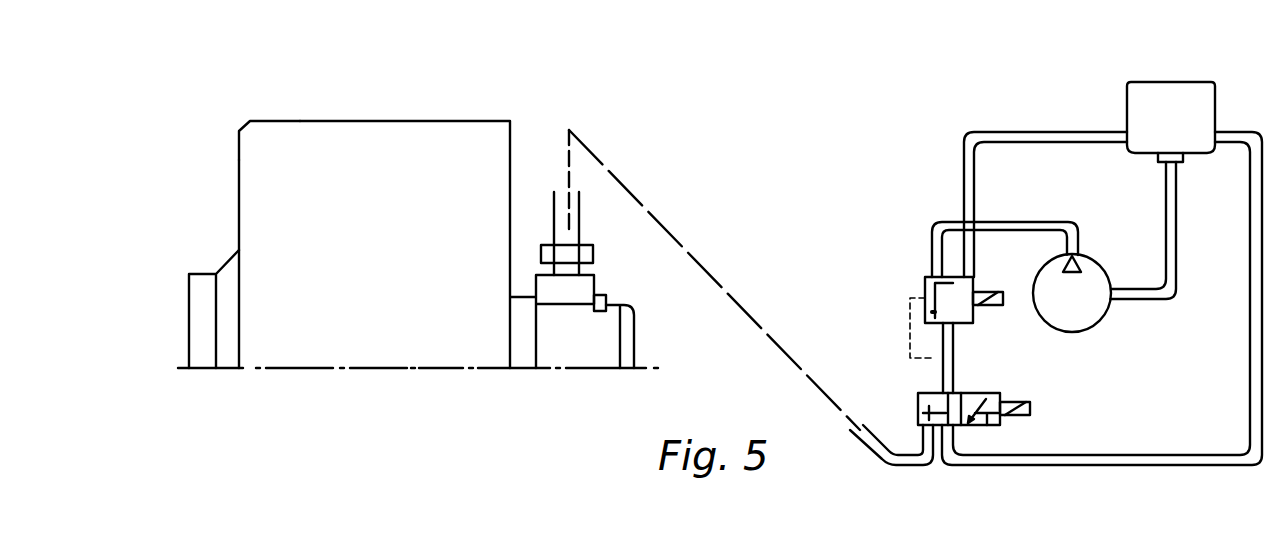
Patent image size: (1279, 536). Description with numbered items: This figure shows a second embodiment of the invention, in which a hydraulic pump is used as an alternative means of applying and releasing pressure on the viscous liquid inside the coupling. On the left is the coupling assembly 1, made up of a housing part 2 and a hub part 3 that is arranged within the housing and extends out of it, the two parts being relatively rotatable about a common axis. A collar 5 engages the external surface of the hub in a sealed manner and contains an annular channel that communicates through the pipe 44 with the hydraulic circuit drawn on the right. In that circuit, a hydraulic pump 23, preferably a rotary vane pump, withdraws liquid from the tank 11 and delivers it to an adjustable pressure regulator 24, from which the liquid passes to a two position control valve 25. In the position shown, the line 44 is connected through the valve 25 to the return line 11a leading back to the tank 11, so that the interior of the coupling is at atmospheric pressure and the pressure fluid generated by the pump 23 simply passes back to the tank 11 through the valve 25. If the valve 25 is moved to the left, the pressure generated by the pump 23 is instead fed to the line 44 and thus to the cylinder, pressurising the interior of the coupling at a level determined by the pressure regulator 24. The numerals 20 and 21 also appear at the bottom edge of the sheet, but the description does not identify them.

The coupling assembly 1 is at (349, 220).
The housing part 2 is at (275, 137).
The hub part 3 is at (600, 327).
The collar 5 is at (548, 287).
The pipe 44 is at (698, 262).
The tank 11 is at (1148, 99).
The return line 11a is at (1123, 465).
The hydraulic pump 23 is at (1088, 307).
The adjustable pressure regulator 24 is at (955, 307).
The two position control valve 25 is at (930, 402).
The element 20 is at (372, 524).
The element 21 is at (300, 524).